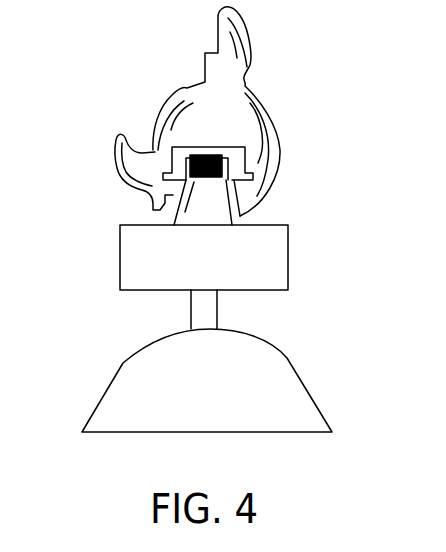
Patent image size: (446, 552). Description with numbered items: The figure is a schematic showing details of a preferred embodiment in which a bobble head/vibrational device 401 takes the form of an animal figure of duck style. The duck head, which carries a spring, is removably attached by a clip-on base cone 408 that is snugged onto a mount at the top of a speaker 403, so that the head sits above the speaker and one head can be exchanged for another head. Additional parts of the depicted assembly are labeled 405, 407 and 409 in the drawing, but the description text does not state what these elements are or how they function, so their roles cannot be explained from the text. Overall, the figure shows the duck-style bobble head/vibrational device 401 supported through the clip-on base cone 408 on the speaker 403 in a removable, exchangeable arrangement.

The bobble head/vibrational device 401 is at (252, 71).
The speaker 403 is at (120, 252).
The base 405 is at (123, 364).
The bulb holder frame 407 is at (186, 143).
The clip-on base cone 408 is at (241, 213).
The light source coil 409 is at (226, 171).